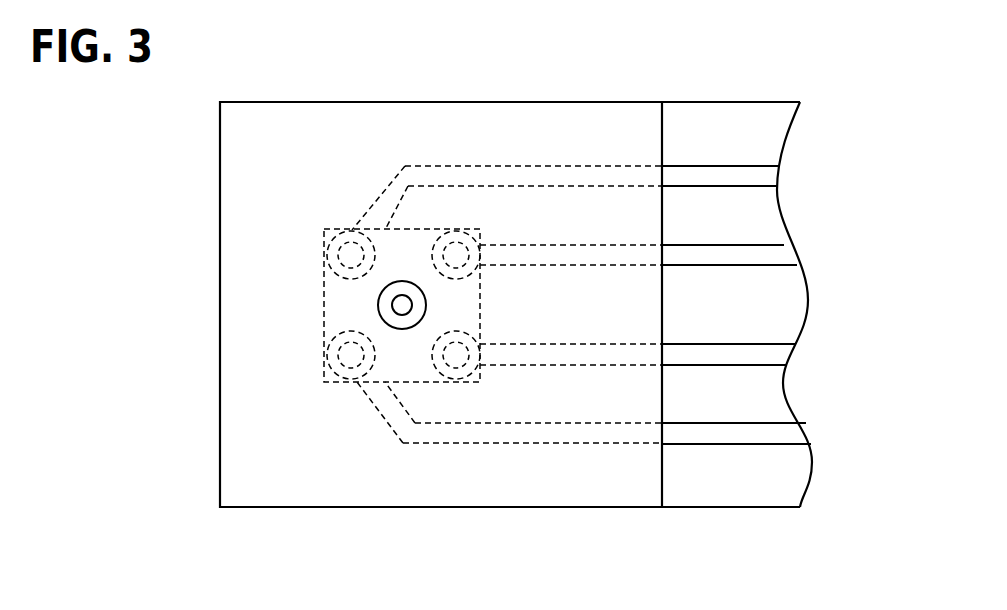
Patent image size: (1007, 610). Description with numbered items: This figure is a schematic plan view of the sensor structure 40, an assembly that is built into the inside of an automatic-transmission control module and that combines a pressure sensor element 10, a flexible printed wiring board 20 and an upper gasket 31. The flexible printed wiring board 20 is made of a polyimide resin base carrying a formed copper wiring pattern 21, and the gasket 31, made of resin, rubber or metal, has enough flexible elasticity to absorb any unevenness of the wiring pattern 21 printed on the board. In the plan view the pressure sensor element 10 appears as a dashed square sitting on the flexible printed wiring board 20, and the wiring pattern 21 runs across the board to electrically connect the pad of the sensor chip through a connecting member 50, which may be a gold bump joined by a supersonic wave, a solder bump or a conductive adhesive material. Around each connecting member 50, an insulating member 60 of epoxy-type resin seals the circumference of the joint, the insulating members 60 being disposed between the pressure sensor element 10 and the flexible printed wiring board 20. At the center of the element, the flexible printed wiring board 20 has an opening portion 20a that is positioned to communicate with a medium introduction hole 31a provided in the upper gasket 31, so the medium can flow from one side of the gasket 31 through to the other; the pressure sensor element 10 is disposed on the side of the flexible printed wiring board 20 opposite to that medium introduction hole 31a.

The pressure sensor element 10 is at (413, 382).
The flexible printed wiring board 20 is at (715, 101).
The opening portion 20a is at (392, 300).
The wiring pattern 21 is at (584, 165).
The upper gasket 31 is at (327, 508).
The medium introduction hole 31a is at (380, 306).
The sensor structure 40 is at (291, 101).
The connecting member 50 is at (442, 243).
The insulating member 60 is at (433, 243).